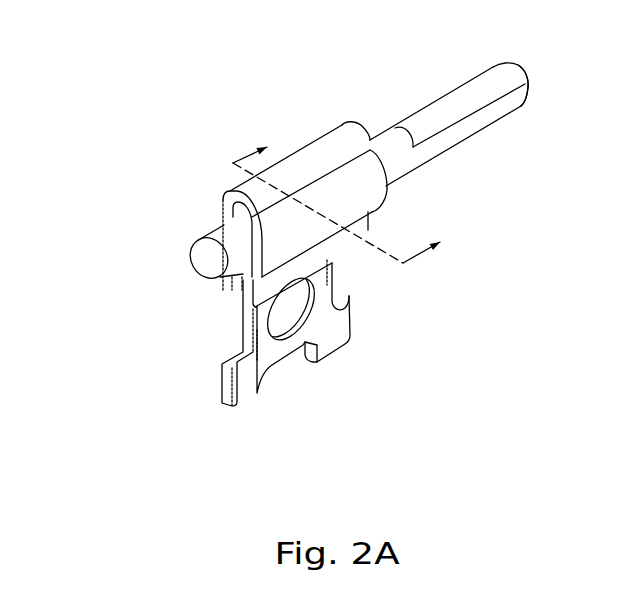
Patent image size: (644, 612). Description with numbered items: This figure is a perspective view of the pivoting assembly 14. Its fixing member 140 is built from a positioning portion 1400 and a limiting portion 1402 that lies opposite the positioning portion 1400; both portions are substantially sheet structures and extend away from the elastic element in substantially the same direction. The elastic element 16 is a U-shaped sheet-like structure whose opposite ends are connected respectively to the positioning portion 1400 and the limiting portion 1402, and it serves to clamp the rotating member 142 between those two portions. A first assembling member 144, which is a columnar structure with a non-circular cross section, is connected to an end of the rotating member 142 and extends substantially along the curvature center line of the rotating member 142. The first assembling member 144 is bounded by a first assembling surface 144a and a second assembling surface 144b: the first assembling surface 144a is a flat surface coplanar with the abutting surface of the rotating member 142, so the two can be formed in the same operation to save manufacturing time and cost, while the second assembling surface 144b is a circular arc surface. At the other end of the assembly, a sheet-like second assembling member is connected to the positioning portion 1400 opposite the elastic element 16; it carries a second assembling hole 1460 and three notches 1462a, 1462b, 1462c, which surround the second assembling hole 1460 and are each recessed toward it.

The pivoting assembly 14 is at (150, 57).
The elastic element 16 is at (323, 150).
The fixing member 140 is at (103, 240).
The positioning portion 1400 is at (226, 295).
The limiting portion 1402 is at (281, 230).
The rotating member 142 is at (377, 141).
The first assembling member 144 is at (443, 148).
The first assembling surface 144a is at (472, 94).
The second assembling surface 144b is at (510, 107).
The second assembling hole 1460 is at (291, 311).
The notch 1462a is at (224, 340).
The notch 1462b is at (294, 374).
The notch 1462c is at (343, 280).